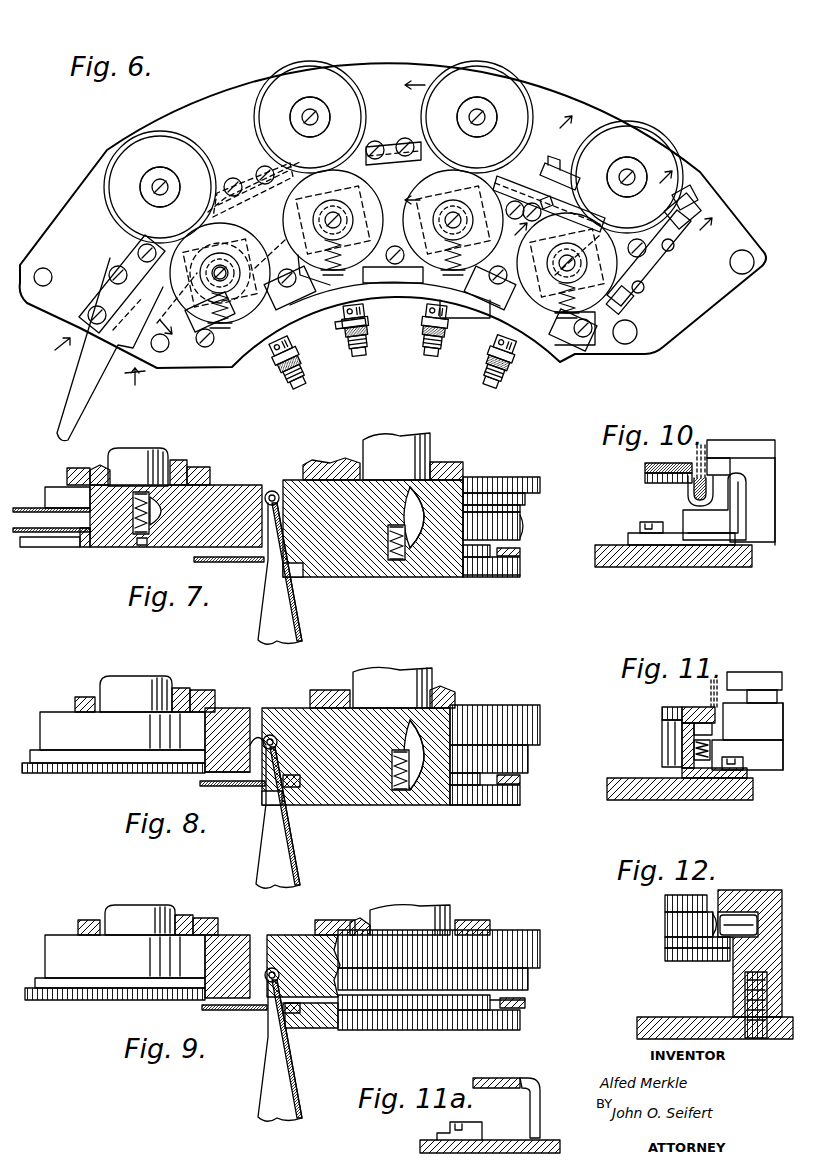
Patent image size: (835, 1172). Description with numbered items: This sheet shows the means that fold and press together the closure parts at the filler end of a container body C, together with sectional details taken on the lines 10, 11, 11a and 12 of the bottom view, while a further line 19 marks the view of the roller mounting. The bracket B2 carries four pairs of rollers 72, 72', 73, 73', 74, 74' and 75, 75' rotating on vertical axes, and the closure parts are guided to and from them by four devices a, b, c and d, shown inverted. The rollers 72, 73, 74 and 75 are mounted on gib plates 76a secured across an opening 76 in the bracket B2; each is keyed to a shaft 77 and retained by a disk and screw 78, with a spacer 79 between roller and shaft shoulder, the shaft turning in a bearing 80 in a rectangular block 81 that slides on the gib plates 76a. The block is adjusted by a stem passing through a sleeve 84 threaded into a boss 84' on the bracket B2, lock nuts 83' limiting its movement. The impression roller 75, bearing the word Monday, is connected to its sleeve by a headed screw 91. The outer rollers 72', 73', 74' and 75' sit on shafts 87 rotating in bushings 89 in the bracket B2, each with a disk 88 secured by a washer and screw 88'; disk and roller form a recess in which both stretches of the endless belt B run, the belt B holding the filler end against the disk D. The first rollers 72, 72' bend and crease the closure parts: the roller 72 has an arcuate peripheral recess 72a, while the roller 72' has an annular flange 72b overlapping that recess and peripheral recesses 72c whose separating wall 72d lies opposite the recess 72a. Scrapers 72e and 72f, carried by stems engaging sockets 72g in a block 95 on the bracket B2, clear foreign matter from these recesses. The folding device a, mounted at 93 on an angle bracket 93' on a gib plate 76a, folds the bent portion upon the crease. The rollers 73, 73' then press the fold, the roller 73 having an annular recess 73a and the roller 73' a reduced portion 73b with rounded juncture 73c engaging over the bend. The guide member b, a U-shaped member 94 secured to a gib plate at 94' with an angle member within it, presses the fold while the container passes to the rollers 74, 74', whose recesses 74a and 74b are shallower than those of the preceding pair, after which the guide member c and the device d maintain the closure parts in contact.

In FIG. 6, the bracket B2 is at (557, 97).
In FIG. 7, the bracket B2 is at (475, 465).
In FIG. 8, the bracket B2 is at (318, 690).
In FIG. 9, the bracket B2 is at (480, 920).
In FIG. 11A, the bracket B2 is at (425, 1146).
In FIG. 12, the bracket B2 is at (658, 1017).
In FIG. 7, the endless belt B is at (522, 553).
In FIG. 8, the endless belt B is at (522, 778).
In FIG. 9, the endless belt B is at (295, 1025).
In FIG. 7, the tubular body C is at (285, 615).
In FIG. 8, the tubular body C is at (288, 845).
In FIG. 9, the tubular body C is at (295, 1085).
In FIG. 7, the disk D is at (243, 562).
In FIG. 8, the disk D is at (244, 786).
In FIG. 9, the disk D is at (245, 1011).
In FIG. 6, the folding device a is at (546, 160).
In FIG. 10, the folding device a is at (688, 495).
In FIG. 6, the guide member b is at (380, 165).
In FIG. 11, the guide member b is at (662, 712).
In FIG. 6, the guide member c is at (232, 198).
In FIG. 6, the guide device d is at (110, 349).
In FIG. 11A, the guide device d is at (528, 1118).
In FIG. 6, the section line 10— 10 is at (539, 182).
In FIG. 6, the section line 11— 11 is at (407, 134).
In FIG. 6, the section line 11a— 11a is at (97, 368).
In FIG. 6, the section line 12— 12 is at (692, 198).
In FIG. 6, the section line 19— 19 is at (356, 290).
In FIG. 6, the roller 72 is at (594, 349).
In FIG. 7, the roller 72 is at (51, 536).
In FIG. 6, the roller 72' is at (634, 163).
In FIG. 7, the roller 72' is at (510, 472).
In FIG. 12, the roller 72' is at (666, 901).
In FIG. 7, the peripheral recess 72a is at (36, 530).
In FIG. 6, the annular flange 72b is at (690, 195).
In FIG. 7, the annular flange 72b is at (540, 487).
In FIG. 12, the annular flange 72b is at (680, 961).
In FIG. 7, the peripheral recesses 72c is at (528, 500).
In FIG. 12, the peripheral recesses 72c is at (665, 920).
In FIG. 7, the separating wall 72d is at (522, 509).
In FIG. 12, the separating wall 72d is at (665, 943).
In FIG. 6, the scraper 72e is at (632, 292).
In FIG. 12, the scraper 72f is at (713, 937).
In FIG. 12, the scraper stem 72g is at (742, 913).
In FIG. 6, the roller 73 is at (465, 322).
In FIG. 8, the roller 73 is at (117, 760).
In FIG. 10, the roller 73 is at (653, 477).
In FIG. 6, the roller 73' is at (489, 106).
In FIG. 8, the roller 73' is at (496, 709).
In FIG. 10, the roller 73' is at (779, 517).
In FIG. 8, the annular recess 73a is at (122, 773).
In FIG. 8, the reduced diameter portion 73b is at (528, 755).
In FIG. 10, the reduced diameter portion 73b is at (765, 470).
In FIG. 8, the rounded juncture 73c is at (263, 735).
In FIG. 6, the roller 74 is at (339, 249).
In FIG. 9, the roller 74 is at (120, 987).
In FIG. 11, the roller 74 is at (652, 743).
In FIG. 6, the roller 74' is at (322, 101).
In FIG. 9, the roller 74' is at (303, 962).
In FIG. 11, the roller 74' is at (784, 751).
In FIG. 9, the annular recess 74a is at (115, 998).
In FIG. 9, the annular recess 74b is at (530, 983).
In FIG. 11, the annular recess 74b is at (747, 736).
In FIG. 6, the impression roller 75 is at (201, 346).
In FIG. 6, the roller 75' is at (160, 173).
In FIG. 6, the opening 76 is at (390, 270).
In FIG. 6, the gib plates 76a is at (240, 325).
In FIG. 10, the gib plates 76a is at (712, 567).
In FIG. 11, the gib plates 76a is at (702, 800).
In FIG. 7, the shaft 77 is at (160, 448).
In FIG. 8, the shaft 77 is at (158, 677).
In FIG. 9, the shaft 77 is at (148, 905).
In FIG. 6, the screw 78 is at (333, 215).
In FIG. 7, the screw 78 is at (138, 546).
In FIG. 7, the spacer 79 is at (225, 486).
In FIG. 8, the spacer 79 is at (228, 710).
In FIG. 9, the spacer 79 is at (230, 936).
In FIG. 7, the bearing 80 is at (185, 465).
In FIG. 8, the bearing 80 is at (185, 688).
In FIG. 9, the bearing 80 is at (188, 915).
In FIG. 7, the rectangular block 81 is at (67, 477).
In FIG. 8, the rectangular block 81 is at (208, 692).
In FIG. 9, the rectangular block 81 is at (208, 918).
In FIG. 6, the lock nuts 83' is at (392, 364).
In FIG. 6, the sleeve 84 is at (397, 350).
In FIG. 6, the boss 84' is at (364, 320).
In FIG. 7, the shaft 87 is at (415, 445).
In FIG. 8, the shaft 87 is at (405, 675).
In FIG. 9, the shaft 87 is at (400, 905).
In FIG. 6, the disk 88 is at (432, 143).
In FIG. 7, the disk 88 is at (491, 546).
In FIG. 8, the disk 88 is at (499, 819).
In FIG. 9, the disk 88 is at (429, 1032).
In FIG. 10, the disk 88 is at (741, 439).
In FIG. 11, the disk 88 is at (760, 670).
In FIG. 6, the screw 88' is at (393, 153).
In FIG. 7, the screw 88' is at (433, 548).
In FIG. 8, the screw 88' is at (426, 779).
In FIG. 11, the screw 88' is at (737, 670).
In FIG. 7, the bushing 89 is at (338, 462).
In FIG. 8, the bushing 89 is at (445, 690).
In FIG. 9, the bushing 89 is at (356, 918).
In FIG. 6, the headed screw 91 is at (220, 270).
In FIG. 10, the folding device mounting 93 is at (741, 506).
In FIG. 10, the angle bracket 93' is at (681, 557).
In FIG. 11, the U-shaped member 94 is at (695, 795).
In FIG. 11, the securing point 94' is at (742, 795).
In FIG. 6, the block 95 is at (657, 263).
In FIG. 12, the block 95 is at (778, 905).